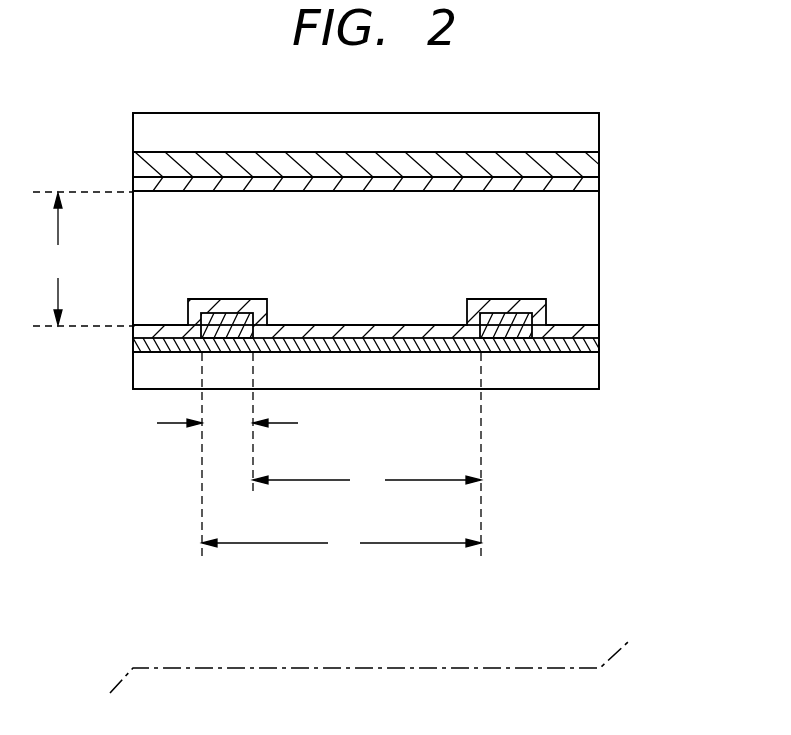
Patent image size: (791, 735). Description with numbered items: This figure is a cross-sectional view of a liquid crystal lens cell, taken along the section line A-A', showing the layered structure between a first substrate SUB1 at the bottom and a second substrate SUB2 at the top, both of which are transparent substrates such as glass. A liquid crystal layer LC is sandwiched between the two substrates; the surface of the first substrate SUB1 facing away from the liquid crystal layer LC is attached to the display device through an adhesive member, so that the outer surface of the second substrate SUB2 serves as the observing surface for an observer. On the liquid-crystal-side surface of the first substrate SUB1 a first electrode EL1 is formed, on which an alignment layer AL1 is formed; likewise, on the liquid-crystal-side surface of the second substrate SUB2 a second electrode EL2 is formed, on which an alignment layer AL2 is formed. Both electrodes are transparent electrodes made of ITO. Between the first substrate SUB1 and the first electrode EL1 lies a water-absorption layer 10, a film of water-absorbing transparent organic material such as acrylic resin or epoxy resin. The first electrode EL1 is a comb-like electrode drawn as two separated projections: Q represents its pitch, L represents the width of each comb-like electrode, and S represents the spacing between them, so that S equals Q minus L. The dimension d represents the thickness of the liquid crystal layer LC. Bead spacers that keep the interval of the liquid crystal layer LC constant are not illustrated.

The second substrate SUB2 is at (586, 131).
The second electrode EL2 is at (590, 163).
The alignment layer AL2 is at (588, 184).
The liquid crystal layer LC is at (587, 257).
The alignment layer AL1 is at (590, 330).
The first electrode EL1 is at (240, 328).
The water-absorption layer 10 is at (590, 345).
The first substrate SUB1 is at (589, 376).
The thickness of the liquid crystal layer d is at (83, 259).
The width of the comb-like electrode L is at (227, 425).
The spacing between comb-like electrodes S is at (367, 481).
The pitch of the comb-like electrode Q is at (341, 545).
The section line A-A' A is at (371, 664).